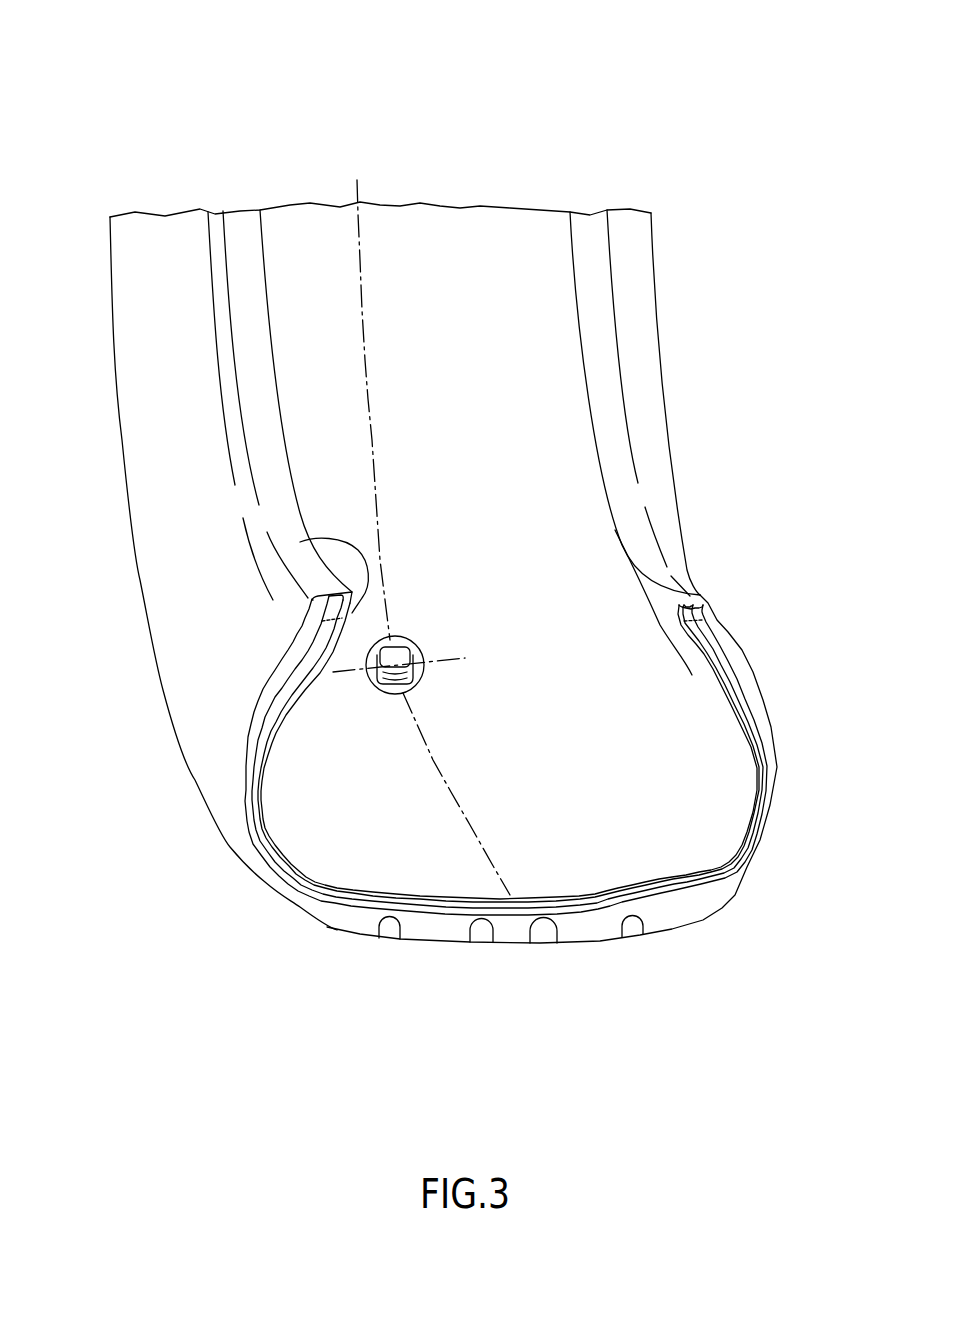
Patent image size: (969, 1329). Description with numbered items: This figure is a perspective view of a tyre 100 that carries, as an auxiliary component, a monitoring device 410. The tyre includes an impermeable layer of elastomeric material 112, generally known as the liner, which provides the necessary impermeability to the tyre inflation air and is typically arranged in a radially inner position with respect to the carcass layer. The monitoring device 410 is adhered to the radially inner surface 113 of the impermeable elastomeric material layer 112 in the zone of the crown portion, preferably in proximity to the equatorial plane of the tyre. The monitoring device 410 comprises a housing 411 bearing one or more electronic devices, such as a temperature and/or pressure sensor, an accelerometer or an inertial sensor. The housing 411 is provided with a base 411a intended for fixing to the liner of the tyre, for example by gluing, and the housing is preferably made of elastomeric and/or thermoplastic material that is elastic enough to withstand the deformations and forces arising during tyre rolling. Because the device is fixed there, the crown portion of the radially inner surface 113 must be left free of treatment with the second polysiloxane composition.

The tire 100 is at (759, 67).
The radially inner surface 113 is at (434, 238).
The impermeable layer of elastomeric material 112 is at (300, 542).
The monitoring device 410 is at (425, 682).
The housing 411 is at (368, 696).
The base 411a is at (393, 690).